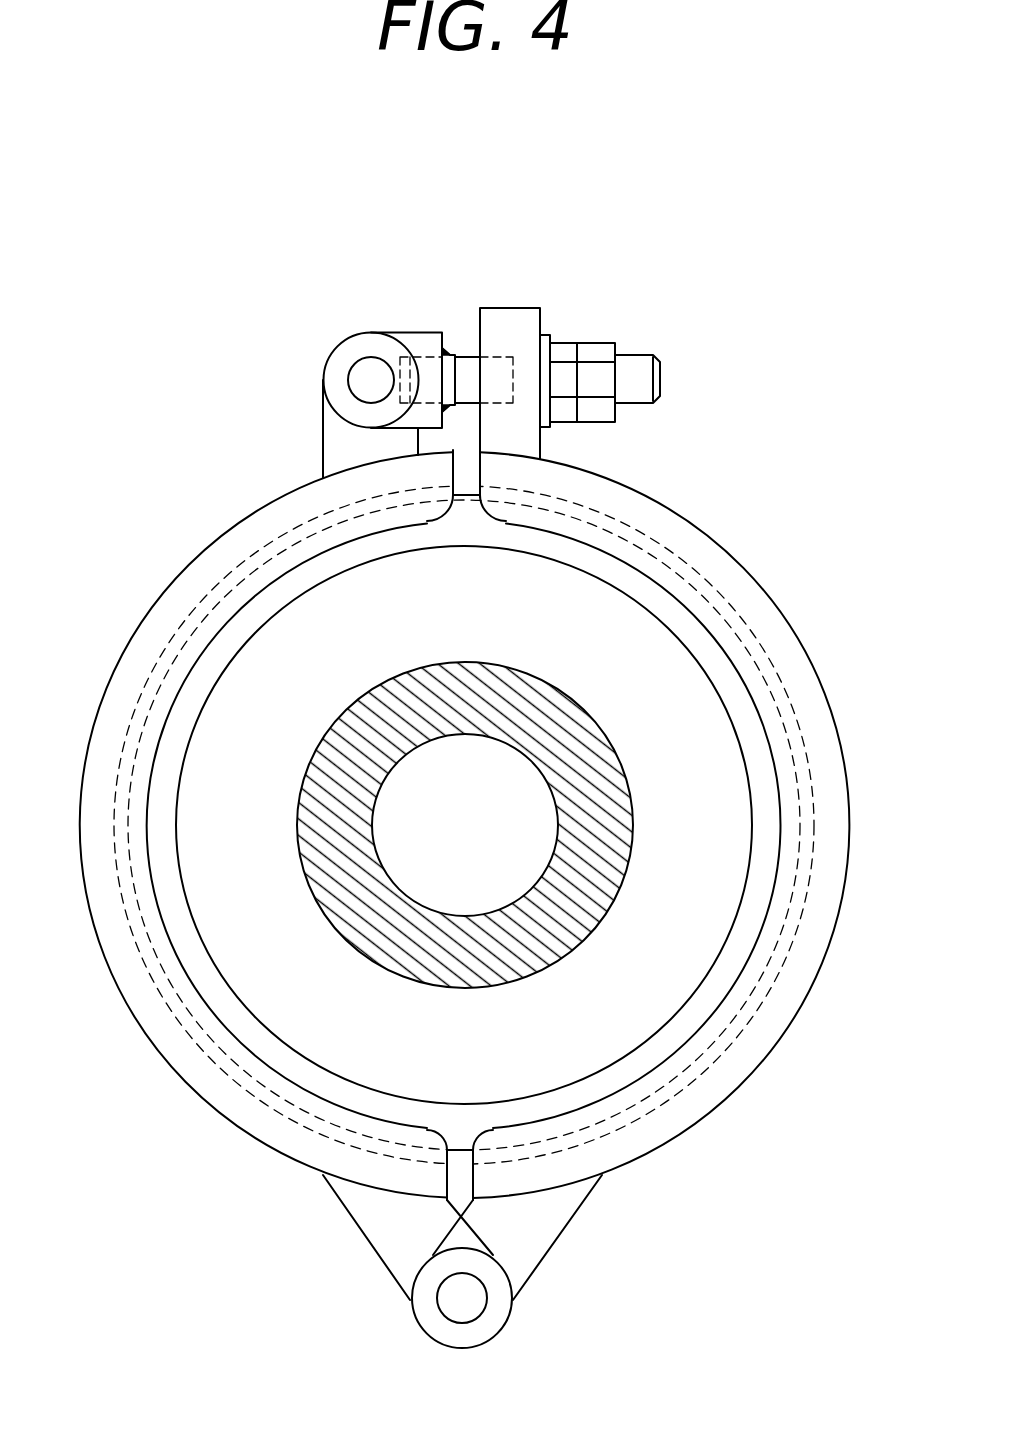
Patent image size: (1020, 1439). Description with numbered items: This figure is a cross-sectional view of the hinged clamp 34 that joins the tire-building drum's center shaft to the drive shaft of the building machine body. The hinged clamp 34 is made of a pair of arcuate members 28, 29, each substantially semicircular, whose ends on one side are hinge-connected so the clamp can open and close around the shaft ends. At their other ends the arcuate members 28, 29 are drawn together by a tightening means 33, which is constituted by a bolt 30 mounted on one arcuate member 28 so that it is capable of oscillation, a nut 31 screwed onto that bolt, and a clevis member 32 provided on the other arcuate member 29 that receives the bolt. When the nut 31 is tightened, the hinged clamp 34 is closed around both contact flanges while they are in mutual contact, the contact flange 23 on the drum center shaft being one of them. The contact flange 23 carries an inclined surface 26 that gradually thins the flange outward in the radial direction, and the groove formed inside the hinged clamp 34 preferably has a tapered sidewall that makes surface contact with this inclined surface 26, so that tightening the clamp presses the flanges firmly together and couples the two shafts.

The contact flange 23 is at (538, 890).
The inclined surface 26 is at (665, 1028).
The arcuate member 28 is at (153, 632).
The arcuate member 29 is at (768, 587).
The bolt 30 is at (638, 370).
The nut 31 is at (563, 352).
The clevis member 32 is at (510, 325).
The tightening means 33 is at (577, 319).
The hinged clamp 34 is at (240, 483).